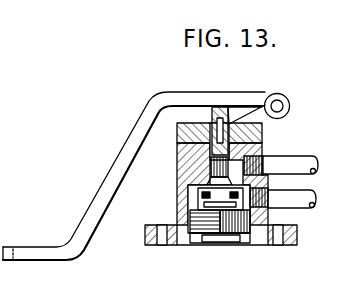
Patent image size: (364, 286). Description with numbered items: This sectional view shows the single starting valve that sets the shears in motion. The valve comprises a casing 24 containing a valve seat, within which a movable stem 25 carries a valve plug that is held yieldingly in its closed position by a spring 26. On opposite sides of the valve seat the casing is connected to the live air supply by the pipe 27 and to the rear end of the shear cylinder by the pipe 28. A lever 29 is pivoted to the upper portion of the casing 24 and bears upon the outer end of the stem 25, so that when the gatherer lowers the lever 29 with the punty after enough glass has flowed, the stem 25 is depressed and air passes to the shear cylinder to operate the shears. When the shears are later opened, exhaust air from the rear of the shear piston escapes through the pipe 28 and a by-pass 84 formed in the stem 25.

The casing 24 is at (177, 177).
The stem 25 is at (215, 106).
The spring 26 is at (203, 202).
The pipe 27 is at (301, 208).
The pipe 28 is at (297, 156).
The lever 29 is at (96, 198).
The by-pass 84 is at (236, 112).